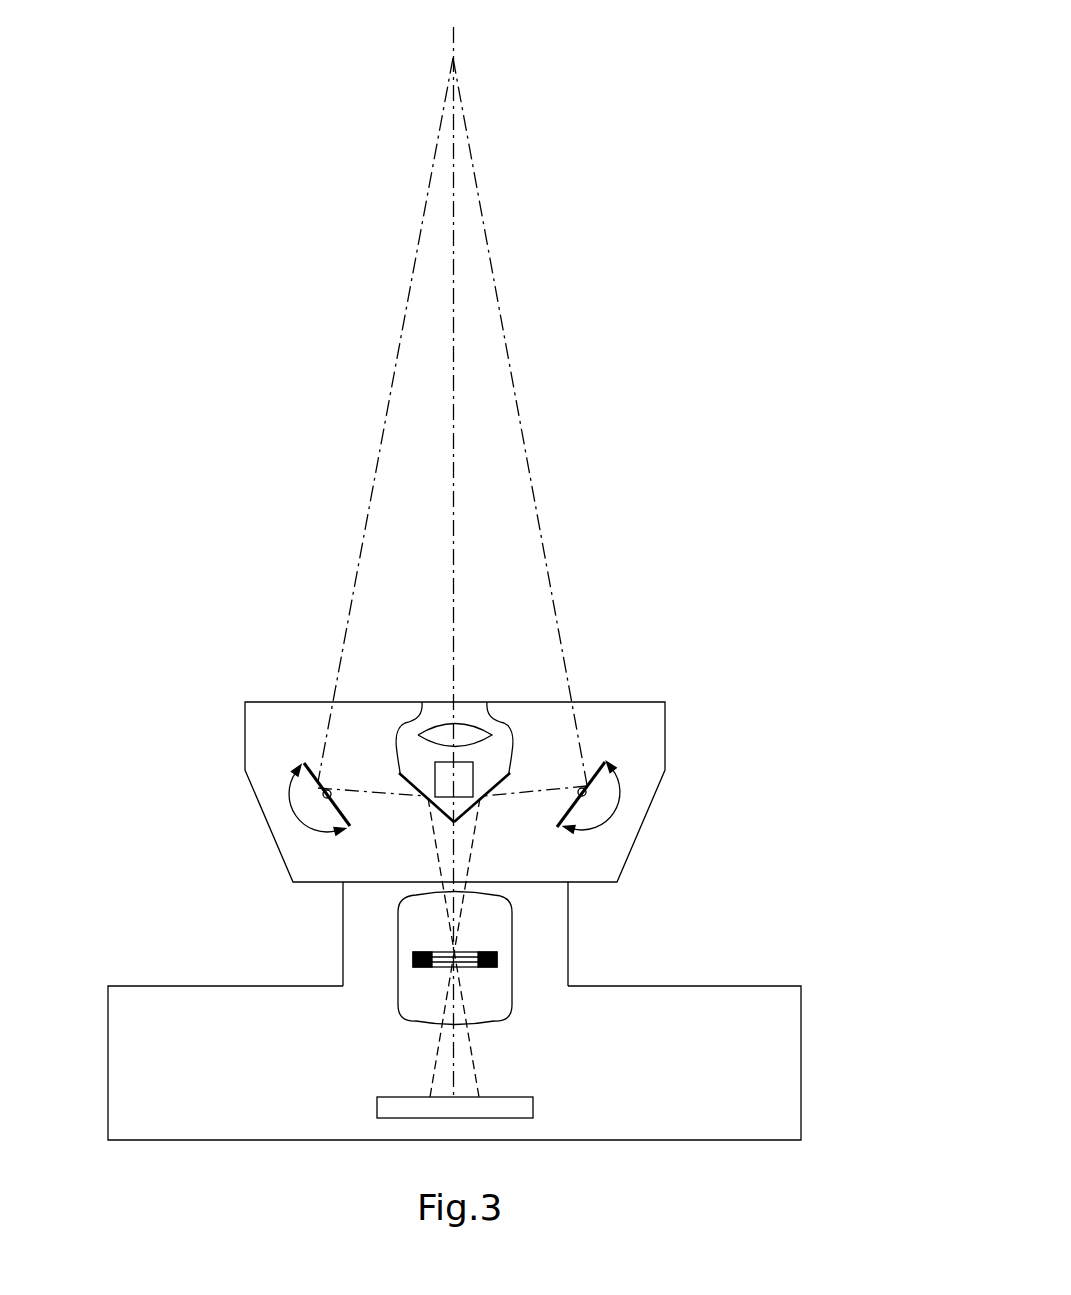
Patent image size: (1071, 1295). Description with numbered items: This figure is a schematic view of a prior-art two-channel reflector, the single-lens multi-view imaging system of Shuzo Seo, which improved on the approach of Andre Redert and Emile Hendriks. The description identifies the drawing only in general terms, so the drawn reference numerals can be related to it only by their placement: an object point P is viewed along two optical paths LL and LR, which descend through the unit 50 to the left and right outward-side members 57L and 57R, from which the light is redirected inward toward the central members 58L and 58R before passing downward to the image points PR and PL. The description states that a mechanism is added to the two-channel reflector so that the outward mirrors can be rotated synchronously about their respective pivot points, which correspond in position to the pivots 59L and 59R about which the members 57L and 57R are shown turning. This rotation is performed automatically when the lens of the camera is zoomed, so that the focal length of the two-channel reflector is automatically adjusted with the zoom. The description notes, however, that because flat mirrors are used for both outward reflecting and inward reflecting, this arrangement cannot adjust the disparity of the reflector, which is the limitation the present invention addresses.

The object point P is at (453, 58).
The left optical path LL is at (385, 417).
The right optical path LR is at (525, 417).
The optical unit housing 50 is at (667, 700).
The left mirror 57L is at (305, 767).
The right mirror 57R is at (605, 762).
The left beam combiner half 58L is at (422, 702).
The right beam combiner half 58R is at (487, 702).
The left mirror pivot axis 59L is at (331, 794).
The right mirror pivot axis 59R is at (578, 792).
The right image point PR is at (431, 1097).
The left image point PL is at (479, 1097).